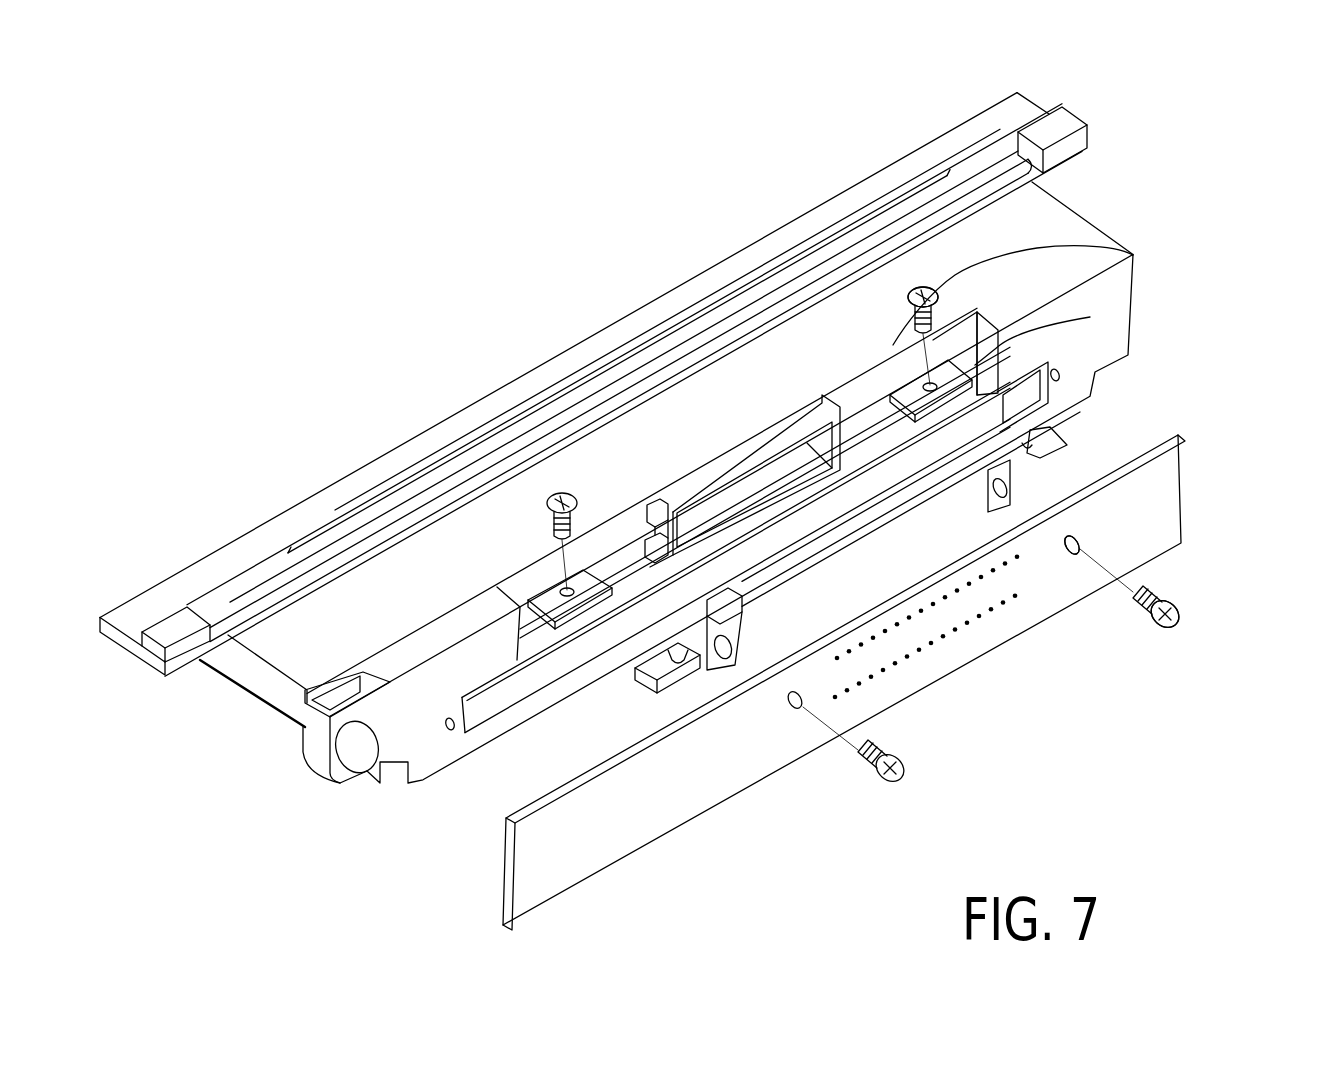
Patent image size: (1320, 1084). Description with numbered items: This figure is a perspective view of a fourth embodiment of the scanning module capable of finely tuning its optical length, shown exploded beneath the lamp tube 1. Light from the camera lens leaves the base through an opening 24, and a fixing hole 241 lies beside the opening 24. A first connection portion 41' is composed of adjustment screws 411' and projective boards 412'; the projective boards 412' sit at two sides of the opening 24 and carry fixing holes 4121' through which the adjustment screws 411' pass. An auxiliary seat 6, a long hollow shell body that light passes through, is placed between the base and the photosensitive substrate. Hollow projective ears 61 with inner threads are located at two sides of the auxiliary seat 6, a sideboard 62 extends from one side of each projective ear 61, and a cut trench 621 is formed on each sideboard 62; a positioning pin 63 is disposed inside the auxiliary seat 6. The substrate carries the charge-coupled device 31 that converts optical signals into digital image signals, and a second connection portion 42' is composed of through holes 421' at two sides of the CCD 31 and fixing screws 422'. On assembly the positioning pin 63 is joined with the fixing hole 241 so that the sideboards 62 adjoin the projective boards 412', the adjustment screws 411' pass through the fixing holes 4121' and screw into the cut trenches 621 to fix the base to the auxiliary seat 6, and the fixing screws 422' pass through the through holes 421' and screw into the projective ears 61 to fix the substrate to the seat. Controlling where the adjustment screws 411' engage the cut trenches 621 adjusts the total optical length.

The lamp tube 1 is at (227, 607).
The opening 24 is at (752, 485).
The fixing hole 241 is at (653, 505).
The first connection portion 41' is at (1095, 261).
The adjustment screws 411' is at (1052, 275).
The projective boards 412' is at (1085, 311).
The fixing holes 4121' is at (729, 396).
The auxiliary seat 6 is at (1055, 440).
The sideboard 62 is at (645, 680).
The cut trench 621 is at (673, 657).
The projective ears 61 is at (707, 670).
The positioning pin 63 is at (727, 645).
The charge-coupled device 31 is at (957, 630).
The second connection portion 42' is at (1135, 683).
The through holes 421' is at (1094, 649).
The fixing screws 422' is at (1152, 647).